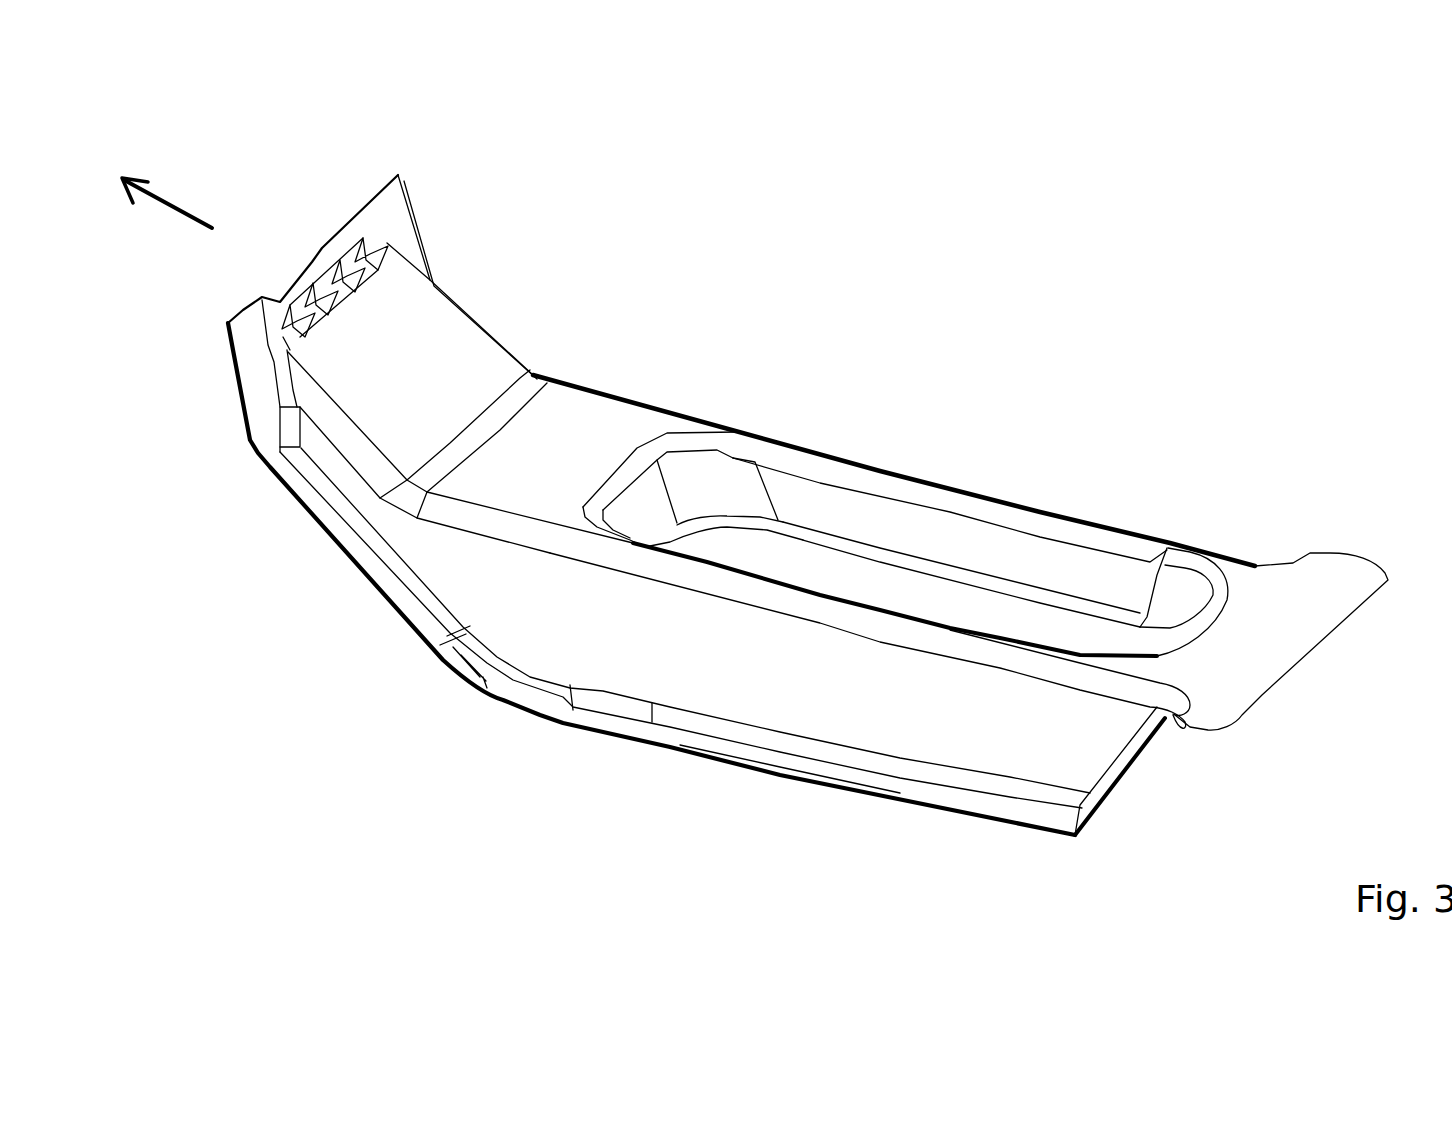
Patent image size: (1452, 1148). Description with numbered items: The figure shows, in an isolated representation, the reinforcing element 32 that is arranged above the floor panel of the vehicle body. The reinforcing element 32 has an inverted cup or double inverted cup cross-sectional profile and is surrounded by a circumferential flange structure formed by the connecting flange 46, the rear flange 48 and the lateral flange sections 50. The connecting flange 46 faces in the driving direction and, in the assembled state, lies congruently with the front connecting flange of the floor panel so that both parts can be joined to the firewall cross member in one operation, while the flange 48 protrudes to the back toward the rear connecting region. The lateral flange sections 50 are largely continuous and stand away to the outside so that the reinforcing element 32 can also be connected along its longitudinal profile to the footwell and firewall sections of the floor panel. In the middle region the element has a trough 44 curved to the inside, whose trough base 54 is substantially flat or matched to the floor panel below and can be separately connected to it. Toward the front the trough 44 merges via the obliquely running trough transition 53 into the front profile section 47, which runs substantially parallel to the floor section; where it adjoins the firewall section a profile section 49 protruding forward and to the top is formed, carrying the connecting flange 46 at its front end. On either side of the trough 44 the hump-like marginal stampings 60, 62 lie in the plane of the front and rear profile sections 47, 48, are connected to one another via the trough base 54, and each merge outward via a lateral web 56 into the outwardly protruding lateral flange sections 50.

The reinforcing element 32 is at (941, 258).
The trough 44 is at (880, 538).
The connecting flange 46 is at (367, 222).
The front profile section 47 is at (560, 418).
The rear flange 48 is at (1297, 595).
The profile section protruding forward and to the top 49 is at (435, 343).
The lateral flange sections 50 is at (615, 737).
The trough transition 53 is at (630, 493).
The trough base 54 is at (742, 542).
The lateral web 56 is at (810, 710).
The marginal stamping 60 is at (963, 645).
The marginal stamping 62 is at (875, 470).